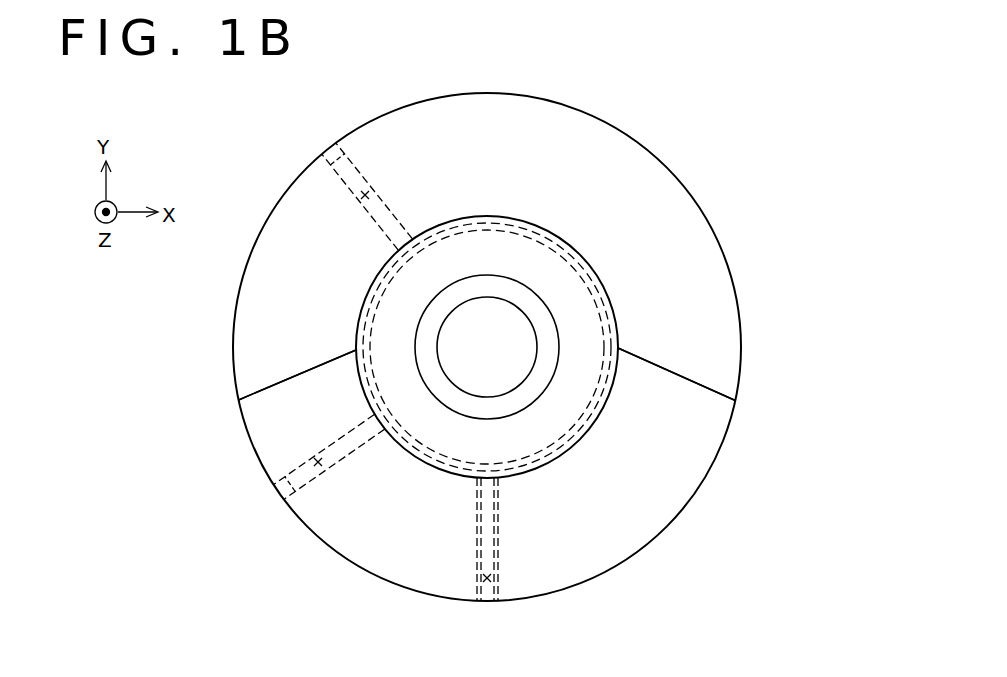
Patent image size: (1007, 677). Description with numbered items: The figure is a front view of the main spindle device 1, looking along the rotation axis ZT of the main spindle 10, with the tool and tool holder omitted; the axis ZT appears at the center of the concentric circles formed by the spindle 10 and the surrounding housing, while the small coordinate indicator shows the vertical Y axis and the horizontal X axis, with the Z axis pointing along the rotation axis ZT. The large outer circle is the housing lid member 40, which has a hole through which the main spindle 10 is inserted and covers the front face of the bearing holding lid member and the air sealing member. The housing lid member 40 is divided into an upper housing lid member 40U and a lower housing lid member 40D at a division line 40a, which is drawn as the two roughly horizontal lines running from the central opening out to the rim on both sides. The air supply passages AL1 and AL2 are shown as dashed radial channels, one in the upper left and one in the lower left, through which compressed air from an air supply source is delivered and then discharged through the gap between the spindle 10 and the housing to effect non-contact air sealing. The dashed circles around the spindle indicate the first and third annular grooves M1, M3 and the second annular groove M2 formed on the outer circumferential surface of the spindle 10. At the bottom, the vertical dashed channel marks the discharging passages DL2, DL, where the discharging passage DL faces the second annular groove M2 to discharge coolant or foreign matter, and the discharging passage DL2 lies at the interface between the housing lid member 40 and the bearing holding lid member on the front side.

The main spindle device 1 is at (258, 173).
The main spindle 10 is at (537, 303).
The housing lid member 40 is at (552, 381).
The upper housing lid member 40U is at (707, 337).
The lower housing lid member 40D is at (687, 435).
The division line 40a is at (273, 386).
The air supply passage AL1 is at (365, 195).
The air supply passage AL2 is at (318, 465).
The first annular groove M1 is at (487, 347).
The third annular groove M3 is at (412, 255).
The second annular groove M2 is at (410, 432).
The rotation axis ZT is at (487, 348).
The discharging passage DL2 is at (584, 547).
The discharging passage DL is at (488, 578).